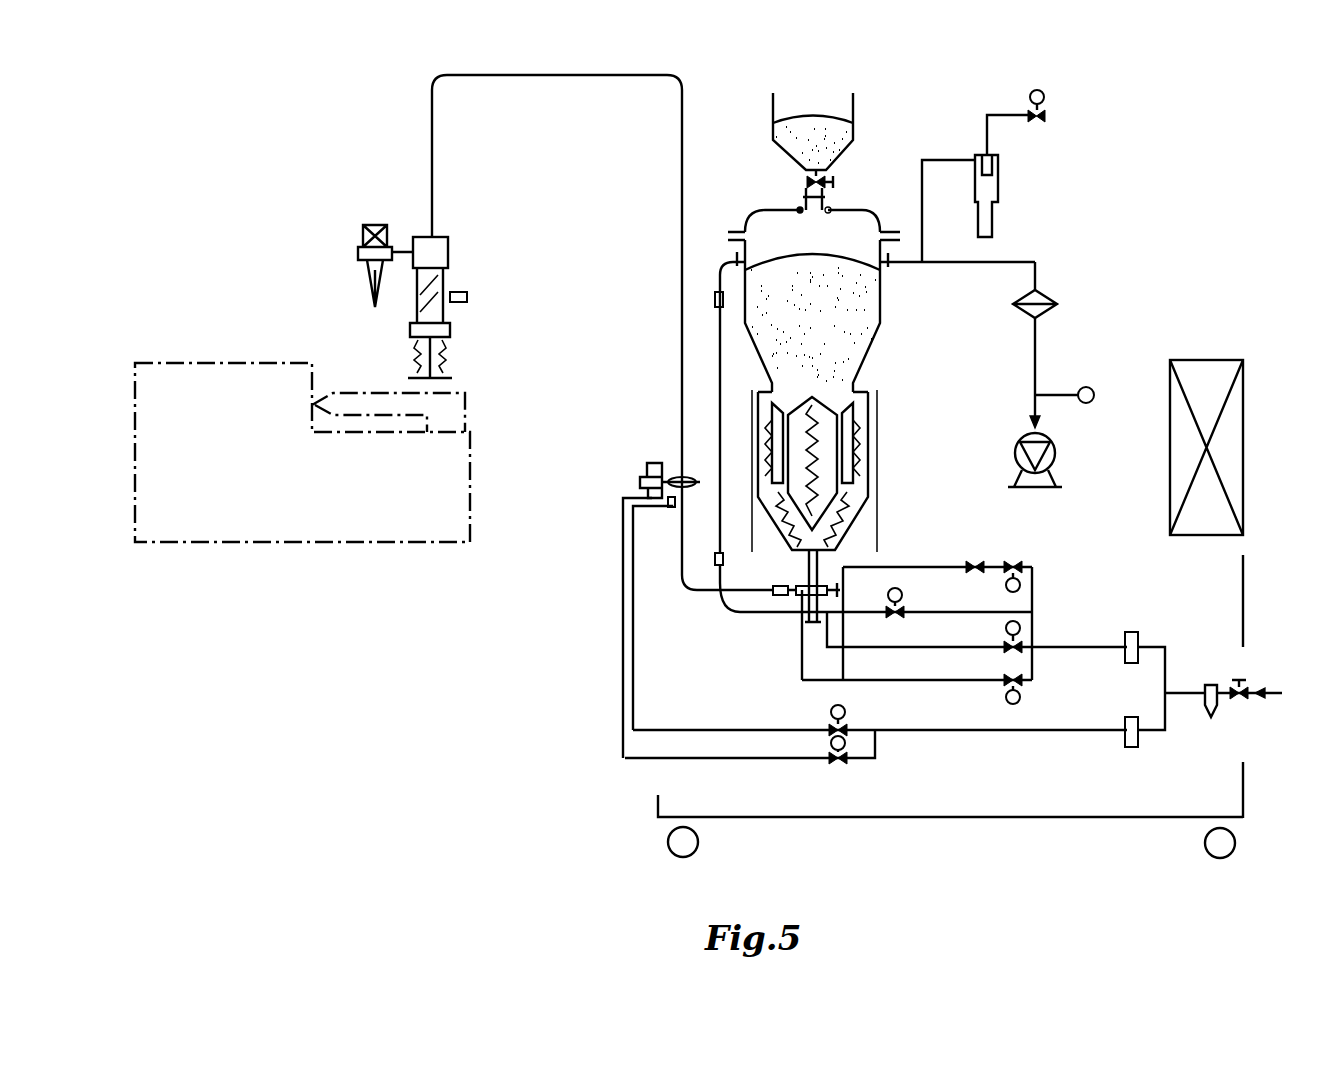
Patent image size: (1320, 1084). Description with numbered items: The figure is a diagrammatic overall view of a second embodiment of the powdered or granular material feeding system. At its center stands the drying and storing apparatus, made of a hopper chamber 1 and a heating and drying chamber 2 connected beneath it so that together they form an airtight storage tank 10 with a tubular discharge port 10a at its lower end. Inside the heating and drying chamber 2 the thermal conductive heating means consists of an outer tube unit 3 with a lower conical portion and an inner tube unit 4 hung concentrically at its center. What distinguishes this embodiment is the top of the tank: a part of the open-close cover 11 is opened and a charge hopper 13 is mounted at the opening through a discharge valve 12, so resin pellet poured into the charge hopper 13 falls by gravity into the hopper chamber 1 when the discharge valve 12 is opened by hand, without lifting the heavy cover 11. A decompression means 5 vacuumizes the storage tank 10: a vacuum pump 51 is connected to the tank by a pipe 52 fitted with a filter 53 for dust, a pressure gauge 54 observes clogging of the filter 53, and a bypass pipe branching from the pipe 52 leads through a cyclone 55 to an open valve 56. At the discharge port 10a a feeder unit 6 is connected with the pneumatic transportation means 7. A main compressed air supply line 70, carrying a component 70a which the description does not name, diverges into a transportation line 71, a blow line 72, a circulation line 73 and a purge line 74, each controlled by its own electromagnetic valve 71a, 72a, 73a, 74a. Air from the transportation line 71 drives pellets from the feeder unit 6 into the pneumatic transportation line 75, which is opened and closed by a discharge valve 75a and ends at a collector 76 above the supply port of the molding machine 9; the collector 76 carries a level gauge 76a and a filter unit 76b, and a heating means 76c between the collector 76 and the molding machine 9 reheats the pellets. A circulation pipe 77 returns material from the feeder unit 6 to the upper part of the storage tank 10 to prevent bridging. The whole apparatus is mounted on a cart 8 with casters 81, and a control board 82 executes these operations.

The hopper chamber 1 is at (883, 318).
The heating and drying chamber 2 is at (882, 470).
The outer tube unit 3 is at (766, 410).
The inner tube unit 4 is at (828, 426).
The decompression means 5 is at (1050, 347).
The feeder unit 6 is at (792, 598).
The pneumatic transportation means 7 is at (1130, 603).
The cart 8 is at (935, 818).
The molding machine 9 is at (318, 525).
The storage tank 10 is at (860, 360).
The discharge port 10a is at (808, 566).
The open-close cover 11 is at (850, 211).
The discharge valve 12 is at (826, 178).
The charge hopper 13 is at (853, 105).
The vacuum pump 51 is at (1053, 455).
The pipe 52 is at (988, 264).
The filter 53 is at (1048, 290).
The pressure gauge 54 is at (922, 225).
The cyclone 55 is at (998, 195).
The open valve 56 is at (1046, 116).
The main compressed air supply line 70 is at (1190, 693).
The regulator 70a is at (1135, 635).
The transportation line 71 is at (932, 647).
The electromagnetic valve 71a is at (1020, 634).
The blow line 72 is at (975, 680).
The electromagnetic valve 72a is at (1022, 692).
The circulation line 73 is at (922, 612).
The electromagnetic valve 73a is at (895, 587).
The purge line 74 is at (975, 560).
The electromagnetic valve 74a is at (1016, 560).
The pneumatic transportation line 75 is at (682, 270).
The discharge valve 75a is at (677, 478).
The collector 76 is at (448, 245).
The level gauge 76a is at (467, 293).
The filter unit 76b is at (358, 253).
The heating means 76c is at (448, 358).
The circulation pipe 77 is at (720, 360).
The casters 81 is at (1205, 848).
The control board 82 is at (1212, 372).